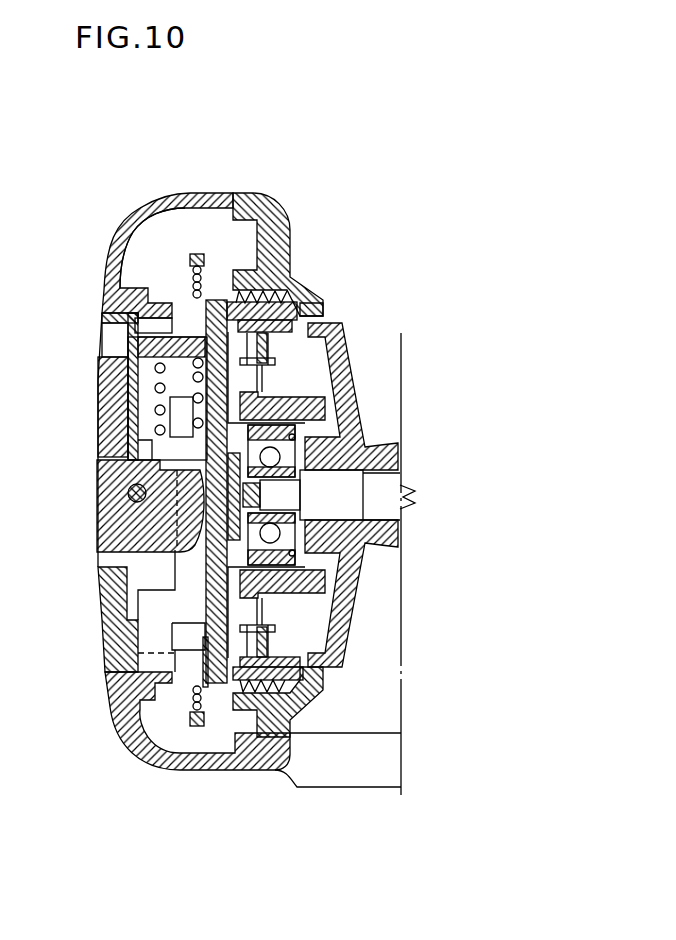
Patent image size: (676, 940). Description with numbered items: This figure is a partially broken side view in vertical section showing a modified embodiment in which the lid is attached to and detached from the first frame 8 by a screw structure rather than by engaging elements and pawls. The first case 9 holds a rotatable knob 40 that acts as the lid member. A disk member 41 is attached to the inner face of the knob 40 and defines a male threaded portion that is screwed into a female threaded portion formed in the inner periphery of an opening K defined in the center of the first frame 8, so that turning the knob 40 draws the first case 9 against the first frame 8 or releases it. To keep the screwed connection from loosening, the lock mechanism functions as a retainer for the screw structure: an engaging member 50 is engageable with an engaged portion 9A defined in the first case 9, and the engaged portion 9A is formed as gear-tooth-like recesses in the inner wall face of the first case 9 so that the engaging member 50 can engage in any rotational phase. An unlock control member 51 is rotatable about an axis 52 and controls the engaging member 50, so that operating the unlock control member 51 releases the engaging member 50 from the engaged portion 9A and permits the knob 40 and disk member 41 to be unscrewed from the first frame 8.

The first frame 8 is at (257, 203).
The first case 9 is at (142, 222).
The engaged portion 9A is at (157, 293).
The knob 40 is at (112, 312).
The disk member 41 is at (220, 300).
The opening K is at (333, 317).
The engaging member 50 is at (187, 576).
The unlock control member 51 is at (113, 380).
The axis 52 is at (137, 488).